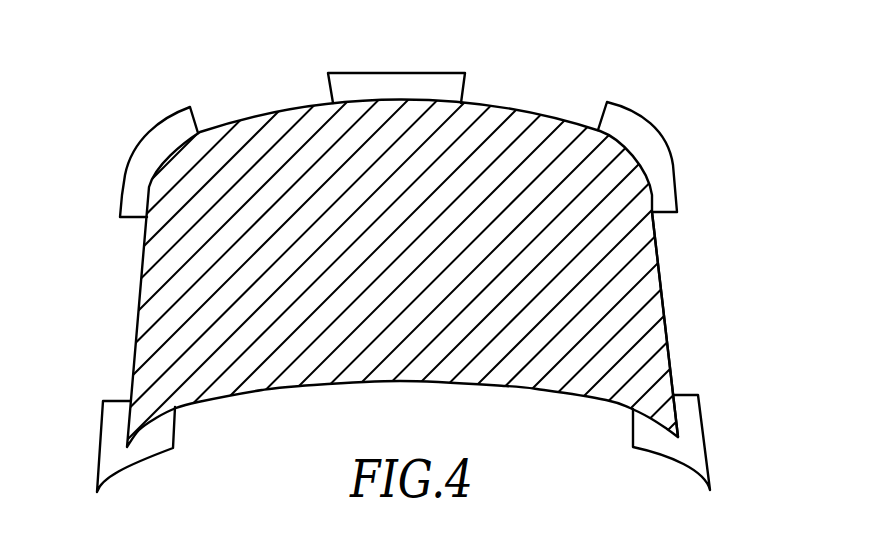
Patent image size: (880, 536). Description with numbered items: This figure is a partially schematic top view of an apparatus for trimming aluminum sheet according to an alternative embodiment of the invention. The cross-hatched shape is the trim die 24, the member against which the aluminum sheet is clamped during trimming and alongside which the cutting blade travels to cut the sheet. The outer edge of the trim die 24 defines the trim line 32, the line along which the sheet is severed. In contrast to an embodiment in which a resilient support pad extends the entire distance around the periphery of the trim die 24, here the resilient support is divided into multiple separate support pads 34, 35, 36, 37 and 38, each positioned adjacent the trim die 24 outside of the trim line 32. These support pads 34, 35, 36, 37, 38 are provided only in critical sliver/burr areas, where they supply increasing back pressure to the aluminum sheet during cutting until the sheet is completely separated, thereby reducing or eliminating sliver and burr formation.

The trim die 24 is at (153, 283).
The trim line 32 is at (665, 295).
The support pad 34 is at (168, 122).
The support pad 35 is at (384, 79).
The support pad 36 is at (663, 168).
The support pad 37 is at (693, 428).
The support pad 38 is at (112, 430).